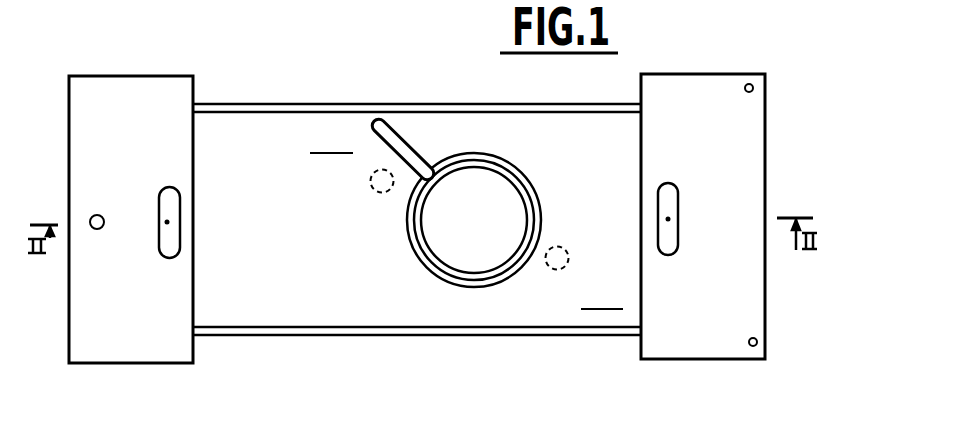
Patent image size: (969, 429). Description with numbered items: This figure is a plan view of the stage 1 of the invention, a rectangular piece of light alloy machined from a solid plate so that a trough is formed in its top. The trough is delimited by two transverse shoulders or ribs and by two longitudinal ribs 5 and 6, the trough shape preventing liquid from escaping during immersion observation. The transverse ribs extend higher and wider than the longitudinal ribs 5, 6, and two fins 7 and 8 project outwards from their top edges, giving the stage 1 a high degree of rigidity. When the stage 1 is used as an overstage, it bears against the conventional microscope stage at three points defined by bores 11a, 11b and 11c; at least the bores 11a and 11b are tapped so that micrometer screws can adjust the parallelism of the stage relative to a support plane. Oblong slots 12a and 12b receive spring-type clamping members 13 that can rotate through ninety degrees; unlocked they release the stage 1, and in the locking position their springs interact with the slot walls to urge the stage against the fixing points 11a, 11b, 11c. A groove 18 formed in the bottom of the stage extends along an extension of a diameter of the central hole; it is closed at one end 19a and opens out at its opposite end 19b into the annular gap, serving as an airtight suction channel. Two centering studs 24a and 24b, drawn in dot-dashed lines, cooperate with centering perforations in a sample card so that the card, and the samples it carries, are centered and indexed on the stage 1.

The stage 1 is at (560, 347).
The longitudinal rib 5 is at (263, 104).
The longitudinal rib 6 is at (258, 336).
The fin 7 is at (122, 350).
The fin 8 is at (690, 342).
The bore 11a is at (753, 88).
The bore 11b is at (757, 342).
The bore 11c is at (96, 229).
The oblong slot 12a is at (170, 225).
The oblong slot 12b is at (676, 221).
The clamping member 13 is at (162, 218).
The groove 18 is at (404, 136).
The closed end 19a is at (331, 142).
The open end 19b is at (602, 299).
The centering stud 24a is at (380, 168).
The centering stud 24b is at (570, 262).